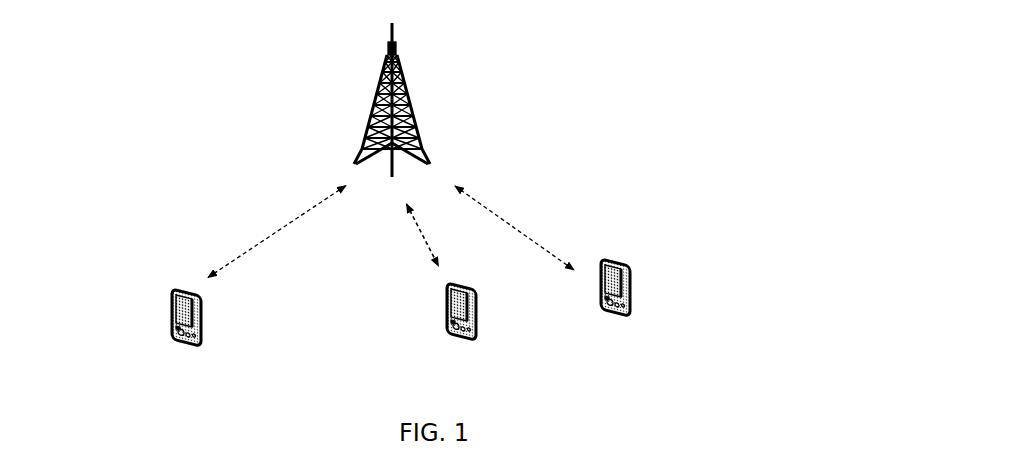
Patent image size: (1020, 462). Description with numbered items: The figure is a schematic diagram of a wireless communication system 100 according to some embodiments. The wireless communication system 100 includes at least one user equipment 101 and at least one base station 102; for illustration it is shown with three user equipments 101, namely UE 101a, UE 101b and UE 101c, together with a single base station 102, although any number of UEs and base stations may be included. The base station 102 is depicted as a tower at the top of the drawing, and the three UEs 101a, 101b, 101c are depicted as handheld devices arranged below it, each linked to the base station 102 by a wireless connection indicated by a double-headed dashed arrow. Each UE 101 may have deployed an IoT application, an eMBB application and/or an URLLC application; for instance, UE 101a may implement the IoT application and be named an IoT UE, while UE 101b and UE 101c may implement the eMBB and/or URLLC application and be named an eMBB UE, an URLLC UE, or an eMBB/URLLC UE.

The wireless communication system 100 is at (627, 77).
The user equipment 101 is at (155, 313).
The UE 101a is at (217, 322).
The UE 101b is at (483, 322).
The UE 101c is at (637, 297).
The base station 102 is at (338, 81).